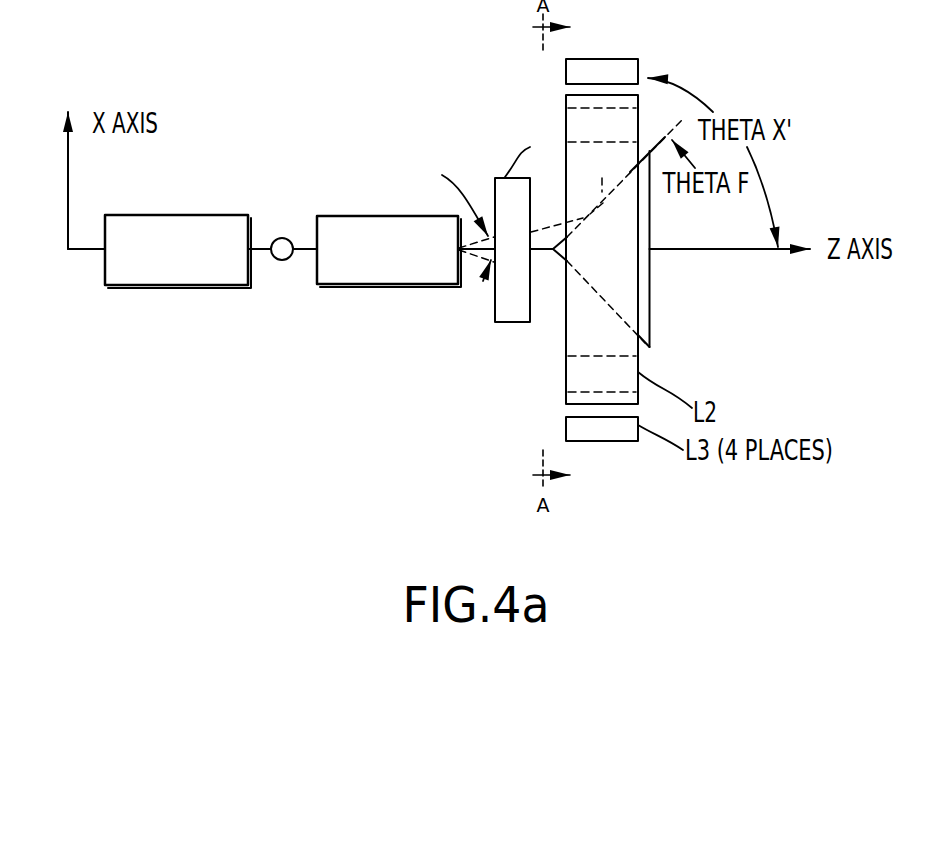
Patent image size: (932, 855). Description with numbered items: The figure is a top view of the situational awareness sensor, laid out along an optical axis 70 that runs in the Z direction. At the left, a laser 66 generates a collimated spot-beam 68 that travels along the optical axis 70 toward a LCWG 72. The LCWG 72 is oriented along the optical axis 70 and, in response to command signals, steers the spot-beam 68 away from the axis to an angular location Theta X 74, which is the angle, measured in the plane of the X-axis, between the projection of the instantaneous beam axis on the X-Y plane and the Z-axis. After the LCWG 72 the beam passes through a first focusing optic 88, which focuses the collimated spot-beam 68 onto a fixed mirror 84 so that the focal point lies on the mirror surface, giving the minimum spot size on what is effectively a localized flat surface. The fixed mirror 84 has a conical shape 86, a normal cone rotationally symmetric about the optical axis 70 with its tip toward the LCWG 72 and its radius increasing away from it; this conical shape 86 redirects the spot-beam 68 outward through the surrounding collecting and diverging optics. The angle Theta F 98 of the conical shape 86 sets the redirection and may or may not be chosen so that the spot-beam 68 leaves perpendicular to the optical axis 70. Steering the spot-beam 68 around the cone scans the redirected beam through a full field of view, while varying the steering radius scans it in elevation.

The laser 66 is at (146, 215).
The collimated spot-beam 68 is at (285, 261).
The optical axis 70 is at (779, 205).
The LCWG 72 is at (336, 216).
The Theta X 74 is at (446, 211).
The fixed mirror 84 is at (650, 302).
The conical shape 86 is at (587, 281).
The optic L1 88 is at (495, 301).
The Theta F 98 is at (711, 203).